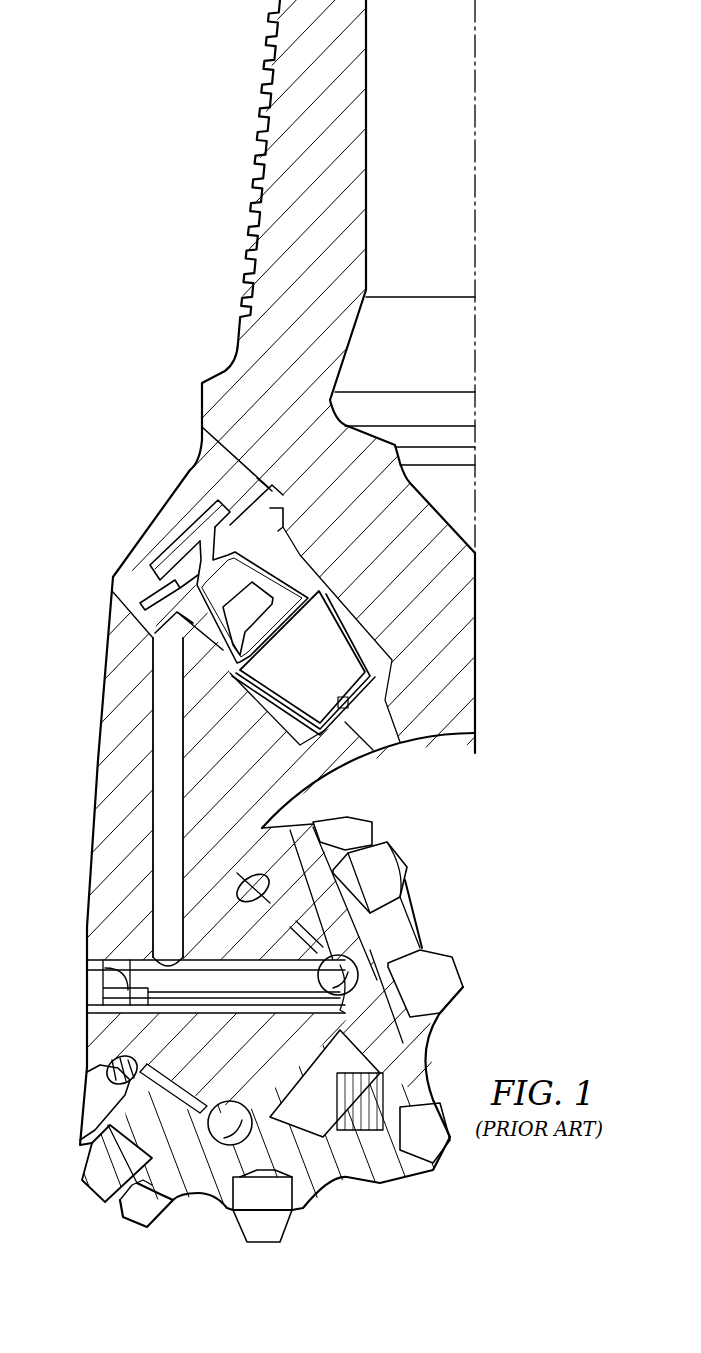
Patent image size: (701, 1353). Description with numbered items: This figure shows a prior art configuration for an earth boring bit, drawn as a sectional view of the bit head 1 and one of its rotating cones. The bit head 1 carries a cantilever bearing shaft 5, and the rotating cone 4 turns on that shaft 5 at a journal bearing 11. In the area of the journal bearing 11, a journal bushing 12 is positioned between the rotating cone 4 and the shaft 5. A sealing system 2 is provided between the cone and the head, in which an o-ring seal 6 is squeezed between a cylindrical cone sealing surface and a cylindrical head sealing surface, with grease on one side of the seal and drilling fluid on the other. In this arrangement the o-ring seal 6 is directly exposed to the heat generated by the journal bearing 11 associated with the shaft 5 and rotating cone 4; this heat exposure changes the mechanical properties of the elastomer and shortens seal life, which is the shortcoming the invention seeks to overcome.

The bit head 1 is at (135, 913).
The sealing system 2 is at (293, 877).
The rotating cone 4 is at (400, 1187).
The shaft 5 is at (307, 1048).
The o-ring seal 6 is at (93, 1100).
The journal bearing 11 is at (305, 928).
The journal bushing 12 is at (402, 897).